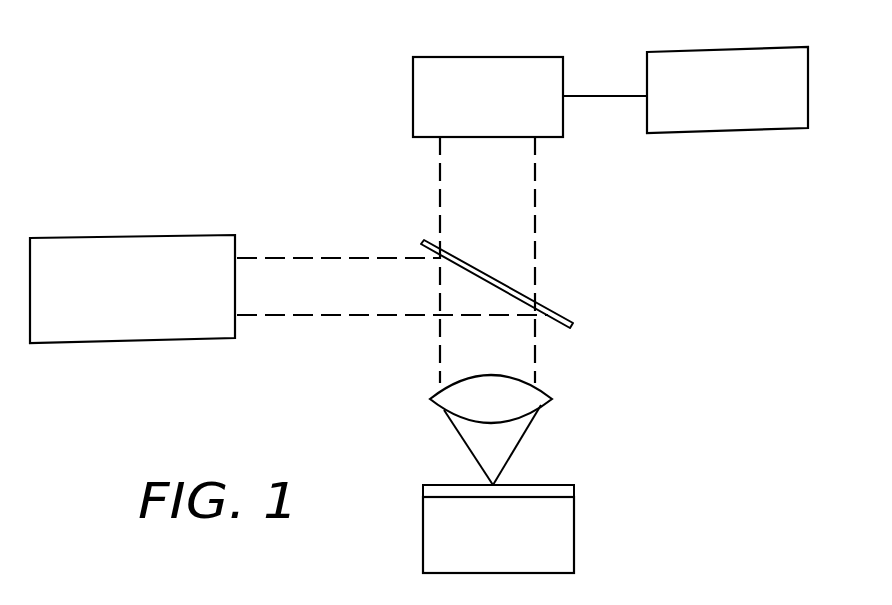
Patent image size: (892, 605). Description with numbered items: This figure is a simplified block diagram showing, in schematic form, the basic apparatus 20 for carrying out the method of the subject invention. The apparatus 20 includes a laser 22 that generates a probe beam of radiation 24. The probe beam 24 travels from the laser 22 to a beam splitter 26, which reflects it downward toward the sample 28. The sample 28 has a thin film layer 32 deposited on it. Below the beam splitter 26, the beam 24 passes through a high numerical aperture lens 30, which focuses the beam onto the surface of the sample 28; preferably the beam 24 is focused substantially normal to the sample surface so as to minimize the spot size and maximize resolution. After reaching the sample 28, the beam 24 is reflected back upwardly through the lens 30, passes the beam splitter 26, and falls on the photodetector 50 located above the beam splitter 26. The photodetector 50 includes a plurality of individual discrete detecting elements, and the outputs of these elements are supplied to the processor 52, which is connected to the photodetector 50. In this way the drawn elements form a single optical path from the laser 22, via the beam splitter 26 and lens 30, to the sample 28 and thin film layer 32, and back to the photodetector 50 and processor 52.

The apparatus 20 is at (709, 231).
The laser 22 is at (132, 262).
The probe beam of radiation 24 is at (392, 260).
The beam splitter 26 is at (528, 284).
The sample 28 is at (537, 535).
The high numerical aperture lens 30 is at (527, 422).
The thin film layer 32 is at (521, 465).
The photodetector 50 is at (488, 68).
The processor 52 is at (685, 67).